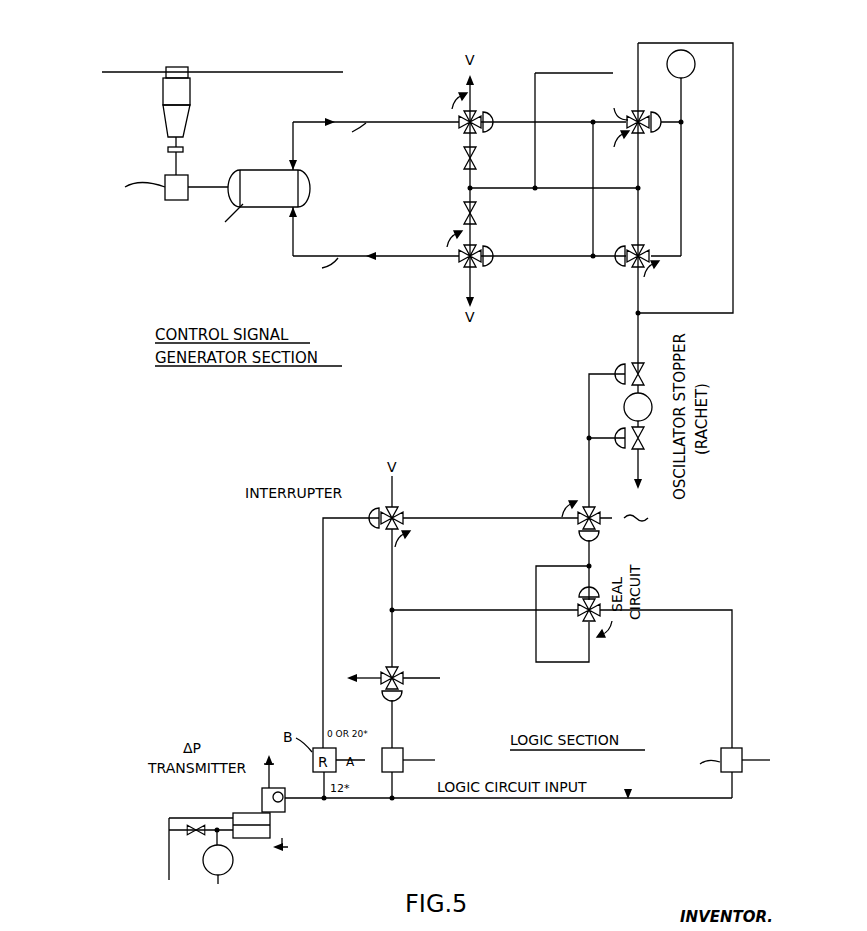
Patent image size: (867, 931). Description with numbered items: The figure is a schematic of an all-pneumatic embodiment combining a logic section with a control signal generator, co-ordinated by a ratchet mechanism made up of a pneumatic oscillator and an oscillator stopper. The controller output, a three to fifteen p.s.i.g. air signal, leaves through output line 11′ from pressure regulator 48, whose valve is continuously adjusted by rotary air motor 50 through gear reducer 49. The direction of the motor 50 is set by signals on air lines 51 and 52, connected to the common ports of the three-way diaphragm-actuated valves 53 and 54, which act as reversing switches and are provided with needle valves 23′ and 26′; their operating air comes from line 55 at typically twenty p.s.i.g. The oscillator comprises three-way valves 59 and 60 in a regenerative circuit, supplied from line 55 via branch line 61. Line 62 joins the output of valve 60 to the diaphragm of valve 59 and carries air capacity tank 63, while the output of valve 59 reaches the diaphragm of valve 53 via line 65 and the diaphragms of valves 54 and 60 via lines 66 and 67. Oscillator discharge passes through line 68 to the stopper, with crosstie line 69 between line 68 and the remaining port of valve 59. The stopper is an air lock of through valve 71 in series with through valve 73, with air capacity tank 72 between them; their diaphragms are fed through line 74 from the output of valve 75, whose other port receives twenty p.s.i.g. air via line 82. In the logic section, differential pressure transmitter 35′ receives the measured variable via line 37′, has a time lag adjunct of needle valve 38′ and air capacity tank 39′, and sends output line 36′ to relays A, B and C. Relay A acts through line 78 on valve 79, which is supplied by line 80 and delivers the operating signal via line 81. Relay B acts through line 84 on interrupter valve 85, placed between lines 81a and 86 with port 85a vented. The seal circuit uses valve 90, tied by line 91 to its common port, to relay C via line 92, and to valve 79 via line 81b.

The output line 11′ is at (303, 73).
The pressure regulator 48 is at (186, 95).
The gear reducer 49 is at (177, 194).
The rotary air motor 50 is at (269, 197).
The air line 51 is at (394, 120).
The air line 52 is at (352, 252).
The 3-way diaphragm-actuated valve 53 is at (482, 130).
The 3-way diaphragm-actuated valve 54 is at (480, 265).
The needle valve 23′ is at (462, 160).
The needle valve 26′ is at (462, 214).
The line 55 is at (537, 157).
The 3-way diaphragm-actuated valve 59 is at (645, 134).
The 3-way diaphragm-actuated valve 60 is at (630, 268).
The branch line 61 is at (568, 190).
The line 62 is at (682, 176).
The air capacity tank 63 is at (688, 77).
The line 65 is at (566, 120).
The line 66 is at (594, 224).
The line 67 is at (540, 255).
The line 68 is at (640, 297).
The crosstie line 69 is at (734, 293).
The diaphragm-actuated through valve 71 is at (632, 364).
The air capacity tank 72 is at (624, 407).
The diaphragm-actuated through valve 73 is at (632, 450).
The line 74 is at (588, 462).
The 3-way diaphragm-actuated valve 75 is at (582, 530).
The line 78 is at (399, 732).
The 3-way valve 79 is at (387, 688).
The line 80 is at (438, 676).
The line 81 is at (394, 633).
The line 81a is at (394, 581).
The line 81b is at (478, 608).
The line 82 is at (634, 519).
The line 84 is at (322, 652).
The 3-way valve 85 is at (382, 531).
The port 85a is at (394, 493).
The line 86 is at (480, 517).
The 3-way diaphragm-actuated valve 90 is at (585, 605).
The line 91 is at (536, 636).
The line 92 is at (731, 656).
The differential pressure transmitter 35′ is at (292, 804).
The output line 36′ is at (358, 802).
The line 37′ is at (168, 856).
The needle valve 38′ is at (196, 838).
The air capacity tank 39′ is at (219, 865).